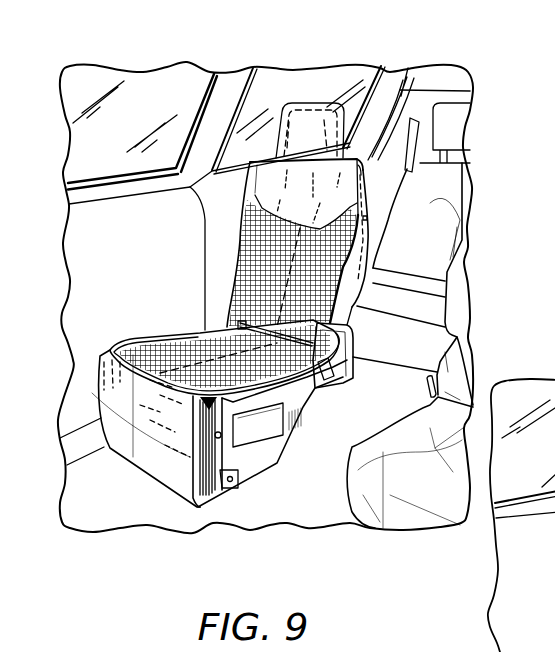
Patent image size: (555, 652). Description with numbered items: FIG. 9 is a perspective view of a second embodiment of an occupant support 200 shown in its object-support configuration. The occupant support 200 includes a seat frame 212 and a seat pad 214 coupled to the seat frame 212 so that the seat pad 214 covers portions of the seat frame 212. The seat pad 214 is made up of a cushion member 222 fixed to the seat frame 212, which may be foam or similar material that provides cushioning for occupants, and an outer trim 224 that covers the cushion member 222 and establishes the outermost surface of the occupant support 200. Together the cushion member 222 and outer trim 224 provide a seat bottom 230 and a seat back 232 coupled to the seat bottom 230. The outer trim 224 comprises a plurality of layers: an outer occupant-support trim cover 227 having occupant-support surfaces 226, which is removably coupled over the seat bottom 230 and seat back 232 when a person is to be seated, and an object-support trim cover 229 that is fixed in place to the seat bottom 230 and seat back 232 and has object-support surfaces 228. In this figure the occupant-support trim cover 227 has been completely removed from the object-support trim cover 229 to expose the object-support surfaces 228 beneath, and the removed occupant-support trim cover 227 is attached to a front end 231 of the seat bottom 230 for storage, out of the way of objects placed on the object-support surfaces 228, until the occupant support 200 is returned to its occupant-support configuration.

The occupant support 200 is at (323, 96).
The seat frame 212 is at (277, 463).
The seat pad 214 is at (369, 156).
The cushion member 222 is at (248, 212).
The outer trim 224 is at (272, 156).
The occupant-support surfaces 226 is at (218, 482).
The outer occupant-support trim cover 227 is at (122, 458).
The object-support surfaces 228 is at (240, 275).
The object-support trim cover 229 is at (358, 263).
The seat bottom 230 is at (332, 400).
The front end 231 is at (132, 346).
The seat back 232 is at (372, 190).